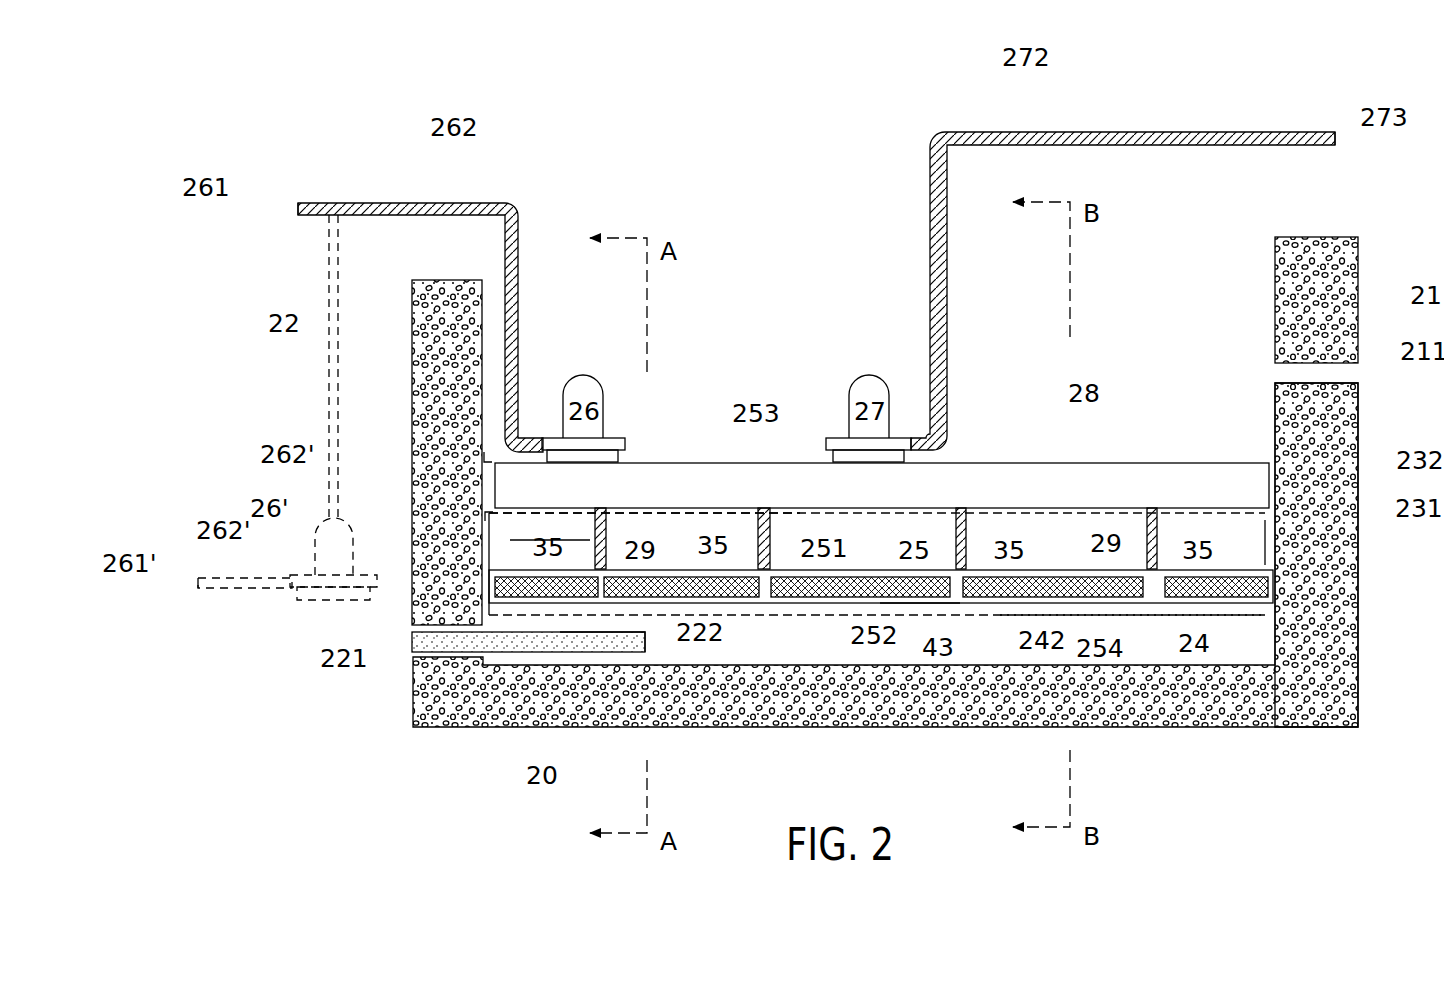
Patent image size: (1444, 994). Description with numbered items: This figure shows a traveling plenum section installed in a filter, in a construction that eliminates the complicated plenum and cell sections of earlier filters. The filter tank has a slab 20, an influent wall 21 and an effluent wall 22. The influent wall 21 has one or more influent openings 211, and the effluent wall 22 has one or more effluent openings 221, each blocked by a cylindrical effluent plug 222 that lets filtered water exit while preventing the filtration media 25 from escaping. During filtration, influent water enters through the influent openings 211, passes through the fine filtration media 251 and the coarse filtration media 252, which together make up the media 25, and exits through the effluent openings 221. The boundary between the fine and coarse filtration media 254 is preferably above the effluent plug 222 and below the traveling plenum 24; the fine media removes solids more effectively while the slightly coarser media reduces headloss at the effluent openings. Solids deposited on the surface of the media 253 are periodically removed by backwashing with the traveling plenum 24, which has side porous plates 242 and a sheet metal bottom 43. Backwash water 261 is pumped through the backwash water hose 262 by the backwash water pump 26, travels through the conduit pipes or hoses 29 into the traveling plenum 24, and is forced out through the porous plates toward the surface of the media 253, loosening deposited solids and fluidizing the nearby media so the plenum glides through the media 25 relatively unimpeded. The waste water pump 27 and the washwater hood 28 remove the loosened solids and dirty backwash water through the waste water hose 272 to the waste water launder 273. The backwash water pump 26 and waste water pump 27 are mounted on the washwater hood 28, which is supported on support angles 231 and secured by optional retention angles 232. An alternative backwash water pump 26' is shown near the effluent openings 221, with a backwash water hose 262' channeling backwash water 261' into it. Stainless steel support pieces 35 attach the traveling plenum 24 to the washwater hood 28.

The slab 20 is at (540, 752).
The influent wall 21 is at (1345, 270).
The influent openings 211 is at (1348, 373).
The effluent wall 22 is at (420, 370).
The effluent openings 221 is at (412, 643).
The effluent plug 222 is at (627, 642).
The retention angles 232 is at (1393, 460).
The support angles 231 is at (1392, 508).
The traveling plenum 24 is at (1153, 593).
The side porous plates 242 is at (1013, 585).
The filtration media 25 is at (932, 563).
The fine filtration media 251 is at (846, 561).
The coarse filtration media 252 is at (896, 648).
The surface of the media 253 is at (712, 510).
The boundary between the fine and coarse filtration media 254 is at (1128, 618).
The backwash water pump 26 is at (583, 418).
The backwash water pump 26' is at (333, 555).
The backwash water 261 is at (265, 206).
The backwash water 261' is at (174, 581).
The backwash water hose 262 is at (420, 297).
The backwash water hose 262' is at (268, 401).
The waste water pump 27 is at (886, 425).
The waste water hose 272 is at (1050, 132).
The waste water launder 273 is at (1433, 138).
The washwater hood 28 is at (1128, 485).
The conduit pipes or hoses 29 is at (1147, 527).
The support pieces 35 is at (1177, 552).
The sheet metal bottom 43 is at (913, 603).